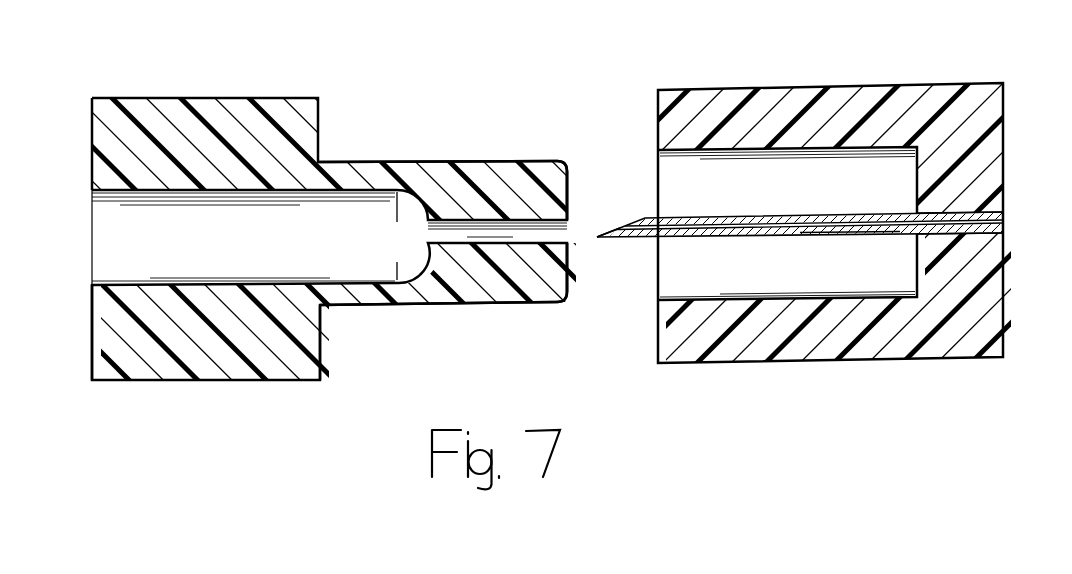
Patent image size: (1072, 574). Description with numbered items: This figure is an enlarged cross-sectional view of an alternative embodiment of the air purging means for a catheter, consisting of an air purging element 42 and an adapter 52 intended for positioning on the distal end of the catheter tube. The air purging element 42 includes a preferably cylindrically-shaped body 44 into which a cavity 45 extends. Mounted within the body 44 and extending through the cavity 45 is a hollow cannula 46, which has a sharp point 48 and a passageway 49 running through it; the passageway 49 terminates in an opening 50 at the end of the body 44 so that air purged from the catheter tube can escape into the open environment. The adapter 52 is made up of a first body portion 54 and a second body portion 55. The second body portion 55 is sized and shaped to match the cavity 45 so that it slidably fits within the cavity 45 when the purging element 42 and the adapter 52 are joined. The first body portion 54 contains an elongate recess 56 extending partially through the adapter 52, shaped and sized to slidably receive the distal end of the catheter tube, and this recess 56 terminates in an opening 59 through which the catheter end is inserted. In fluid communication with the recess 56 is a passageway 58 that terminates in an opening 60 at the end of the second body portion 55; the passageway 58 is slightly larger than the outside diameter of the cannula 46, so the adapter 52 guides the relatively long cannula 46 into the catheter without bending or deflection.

The air purging element 42 is at (797, 84).
The body 44 is at (912, 95).
The cavity 45 is at (682, 260).
The hollow cannula 46 is at (753, 215).
The sharp point 48 is at (593, 238).
The passageway 49 is at (835, 223).
The opening 50 is at (1005, 218).
The adapter 52 is at (296, 373).
The first body portion 54 is at (216, 372).
The second body portion 55 is at (446, 303).
The elongate recess 56 is at (348, 215).
The passageway 58 is at (515, 237).
The opening 59 is at (90, 264).
The opening 60 is at (573, 223).